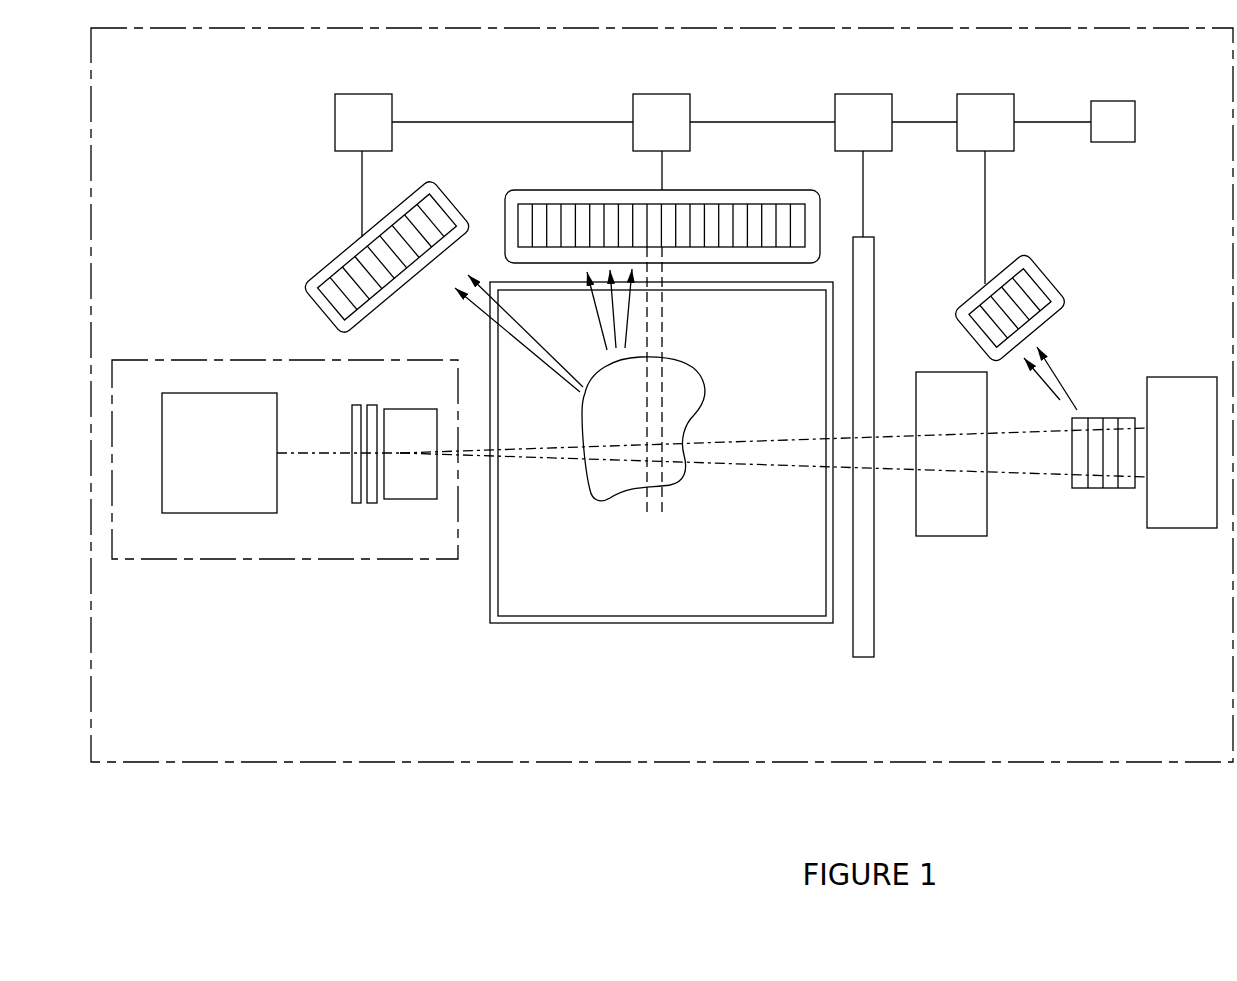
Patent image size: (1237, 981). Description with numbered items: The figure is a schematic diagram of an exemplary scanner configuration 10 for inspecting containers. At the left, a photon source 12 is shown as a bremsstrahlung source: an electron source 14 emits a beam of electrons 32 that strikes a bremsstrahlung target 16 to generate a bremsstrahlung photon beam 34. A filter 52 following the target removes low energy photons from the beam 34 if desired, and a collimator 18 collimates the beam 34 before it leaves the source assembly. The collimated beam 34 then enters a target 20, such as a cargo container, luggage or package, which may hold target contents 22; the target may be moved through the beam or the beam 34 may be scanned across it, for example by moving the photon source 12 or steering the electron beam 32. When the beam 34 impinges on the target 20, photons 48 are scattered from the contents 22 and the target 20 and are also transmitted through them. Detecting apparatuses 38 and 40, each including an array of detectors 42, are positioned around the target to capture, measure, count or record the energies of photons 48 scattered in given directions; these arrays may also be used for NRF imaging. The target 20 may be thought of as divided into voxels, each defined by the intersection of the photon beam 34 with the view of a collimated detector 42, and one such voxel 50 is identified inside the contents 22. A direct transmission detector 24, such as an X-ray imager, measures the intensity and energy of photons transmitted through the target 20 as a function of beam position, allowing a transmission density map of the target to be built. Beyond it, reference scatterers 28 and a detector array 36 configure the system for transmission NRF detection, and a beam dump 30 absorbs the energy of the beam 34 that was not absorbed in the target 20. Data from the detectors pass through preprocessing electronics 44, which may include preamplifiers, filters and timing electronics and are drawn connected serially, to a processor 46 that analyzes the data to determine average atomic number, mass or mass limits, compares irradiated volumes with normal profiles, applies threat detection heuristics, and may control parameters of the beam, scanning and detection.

The X-ray imaging system 10 is at (525, 764).
The photon source 12 is at (237, 562).
The electron source 14 is at (206, 468).
The bremsstrahlung target 16 is at (352, 468).
The collimator 18 is at (396, 491).
The target 20 is at (553, 624).
The target contents 22 is at (602, 433).
The direct transmission detector 24 is at (868, 658).
The reference scatterers 28 is at (1123, 478).
The beam dump 30 is at (1169, 468).
The beam of electrons 32 is at (302, 452).
The bremsstrahlung photon beam 34 is at (533, 460).
The detector array 36 is at (1002, 265).
The detecting apparatus 38 is at (710, 190).
The detecting apparatus 40 is at (328, 258).
The detectors 42 is at (430, 236).
The preprocessing electronics 44 is at (350, 136).
The processor 46 is at (1100, 135).
The photons 48 is at (550, 363).
The voxel 50 is at (653, 453).
The filter 52 is at (368, 504).